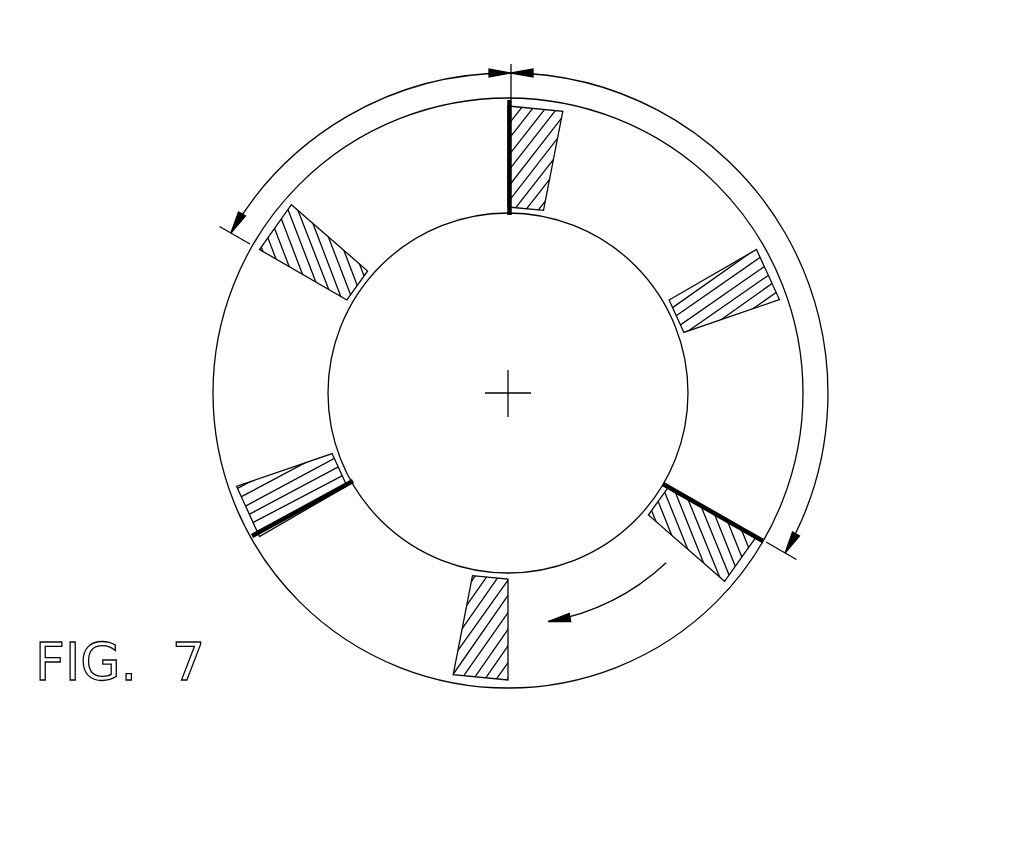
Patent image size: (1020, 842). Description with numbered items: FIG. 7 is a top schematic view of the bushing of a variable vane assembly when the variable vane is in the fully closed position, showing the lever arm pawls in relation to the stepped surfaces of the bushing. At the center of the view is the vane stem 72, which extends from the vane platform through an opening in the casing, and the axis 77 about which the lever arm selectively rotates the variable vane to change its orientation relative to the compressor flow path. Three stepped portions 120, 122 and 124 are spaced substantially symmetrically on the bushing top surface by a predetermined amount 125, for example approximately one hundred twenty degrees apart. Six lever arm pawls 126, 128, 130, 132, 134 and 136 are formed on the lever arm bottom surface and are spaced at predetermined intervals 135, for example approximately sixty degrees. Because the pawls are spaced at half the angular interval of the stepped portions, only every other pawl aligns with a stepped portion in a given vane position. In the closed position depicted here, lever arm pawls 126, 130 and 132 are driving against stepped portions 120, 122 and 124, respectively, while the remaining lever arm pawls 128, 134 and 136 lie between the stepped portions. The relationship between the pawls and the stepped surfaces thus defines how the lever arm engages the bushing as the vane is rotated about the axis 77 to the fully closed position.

The vane stem 72 is at (546, 467).
The axis 77 is at (508, 393).
The stepped portion 120 is at (507, 125).
The stepped portion 122 is at (755, 528).
The stepped portion 124 is at (267, 530).
The predetermined amount 125 is at (792, 225).
The lever arm pawl 126 is at (536, 168).
The lever arm pawl 128 is at (753, 298).
The lever arm pawl 130 is at (712, 558).
The lever arm pawl 132 is at (472, 622).
The lever arm pawl 134 is at (258, 488).
The predetermined intervals 135 is at (318, 135).
The lever arm pawl 136 is at (318, 240).